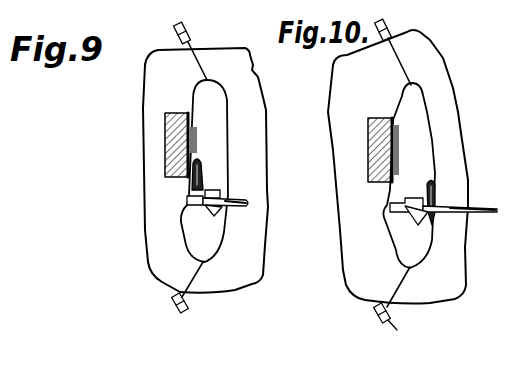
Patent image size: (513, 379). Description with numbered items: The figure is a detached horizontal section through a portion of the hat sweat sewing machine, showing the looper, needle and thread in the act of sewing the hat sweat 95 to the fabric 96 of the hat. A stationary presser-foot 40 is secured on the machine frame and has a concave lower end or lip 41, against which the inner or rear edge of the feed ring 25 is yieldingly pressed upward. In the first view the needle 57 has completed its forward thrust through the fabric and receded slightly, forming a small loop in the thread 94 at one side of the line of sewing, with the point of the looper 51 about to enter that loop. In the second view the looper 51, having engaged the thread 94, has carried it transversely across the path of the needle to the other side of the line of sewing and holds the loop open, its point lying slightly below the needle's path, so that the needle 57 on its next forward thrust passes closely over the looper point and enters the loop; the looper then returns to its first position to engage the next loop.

In FIG. 9, the hat sweat 95 is at (205, 170).
In FIG. 10, the hat sweat 95 is at (398, 167).
In FIG. 9, the fabric 96 is at (210, 52).
In FIG. 10, the fabric 96 is at (408, 52).
In FIG. 9, the presser-foot 40 is at (165, 136).
In FIG. 10, the presser-foot 40 is at (365, 150).
In FIG. 9, the lip 41 is at (210, 135).
In FIG. 10, the lip 41 is at (413, 146).
In FIG. 9, the looper 51 is at (203, 163).
In FIG. 10, the looper 51 is at (435, 188).
In FIG. 9, the needle 57 is at (249, 206).
In FIG. 10, the needle 57 is at (470, 211).
In FIG. 9, the thread 94 is at (213, 205).
In FIG. 10, the thread 94 is at (420, 210).
In FIG. 9, the feed ring 25 is at (187, 298).
In FIG. 10, the feed ring 25 is at (391, 309).